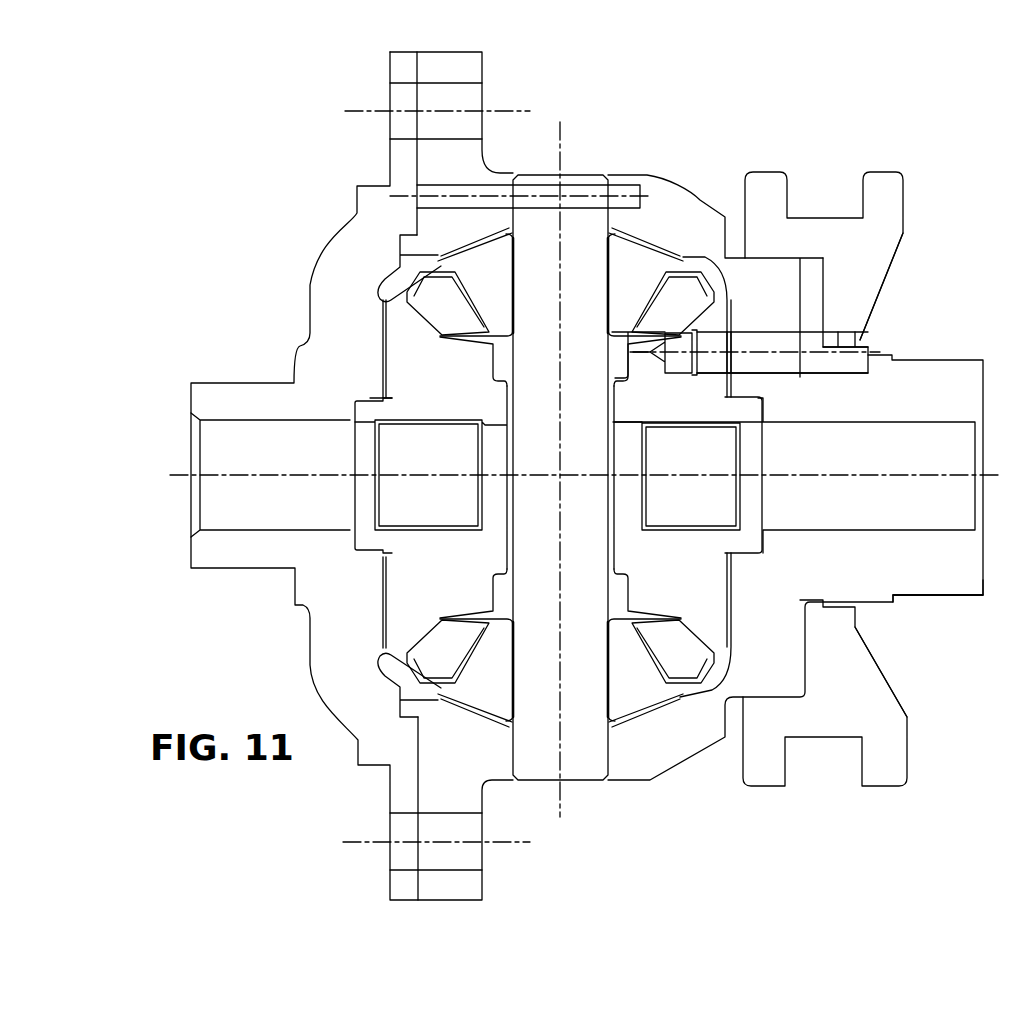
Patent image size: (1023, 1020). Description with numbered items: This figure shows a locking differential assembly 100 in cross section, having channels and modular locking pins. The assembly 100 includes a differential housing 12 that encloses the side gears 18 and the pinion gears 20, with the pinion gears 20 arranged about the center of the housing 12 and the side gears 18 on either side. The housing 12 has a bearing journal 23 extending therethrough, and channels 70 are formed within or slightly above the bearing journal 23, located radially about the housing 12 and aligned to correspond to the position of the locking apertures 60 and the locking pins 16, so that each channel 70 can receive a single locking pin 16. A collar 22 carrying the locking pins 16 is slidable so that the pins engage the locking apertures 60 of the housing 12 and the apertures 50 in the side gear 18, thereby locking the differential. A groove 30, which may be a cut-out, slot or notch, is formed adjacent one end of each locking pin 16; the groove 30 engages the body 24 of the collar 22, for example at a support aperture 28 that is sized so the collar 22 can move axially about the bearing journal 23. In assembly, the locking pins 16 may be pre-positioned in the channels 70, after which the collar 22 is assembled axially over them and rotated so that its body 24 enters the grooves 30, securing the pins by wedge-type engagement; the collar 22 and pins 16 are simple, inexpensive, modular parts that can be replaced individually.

The locking differential assembly 100 is at (235, 180).
The differential housing 12 is at (680, 207).
The locking pin 16 is at (764, 338).
The side gear 18 is at (440, 558).
The pinion gear 20 is at (483, 258).
The collar 22 is at (887, 215).
The bearing journal 23 is at (964, 597).
The body 24 is at (873, 253).
The support aperture 28 is at (848, 340).
The groove 30 is at (580, 750).
The aperture 50 is at (688, 355).
The locking aperture 60 is at (733, 353).
The channel 70 is at (943, 367).